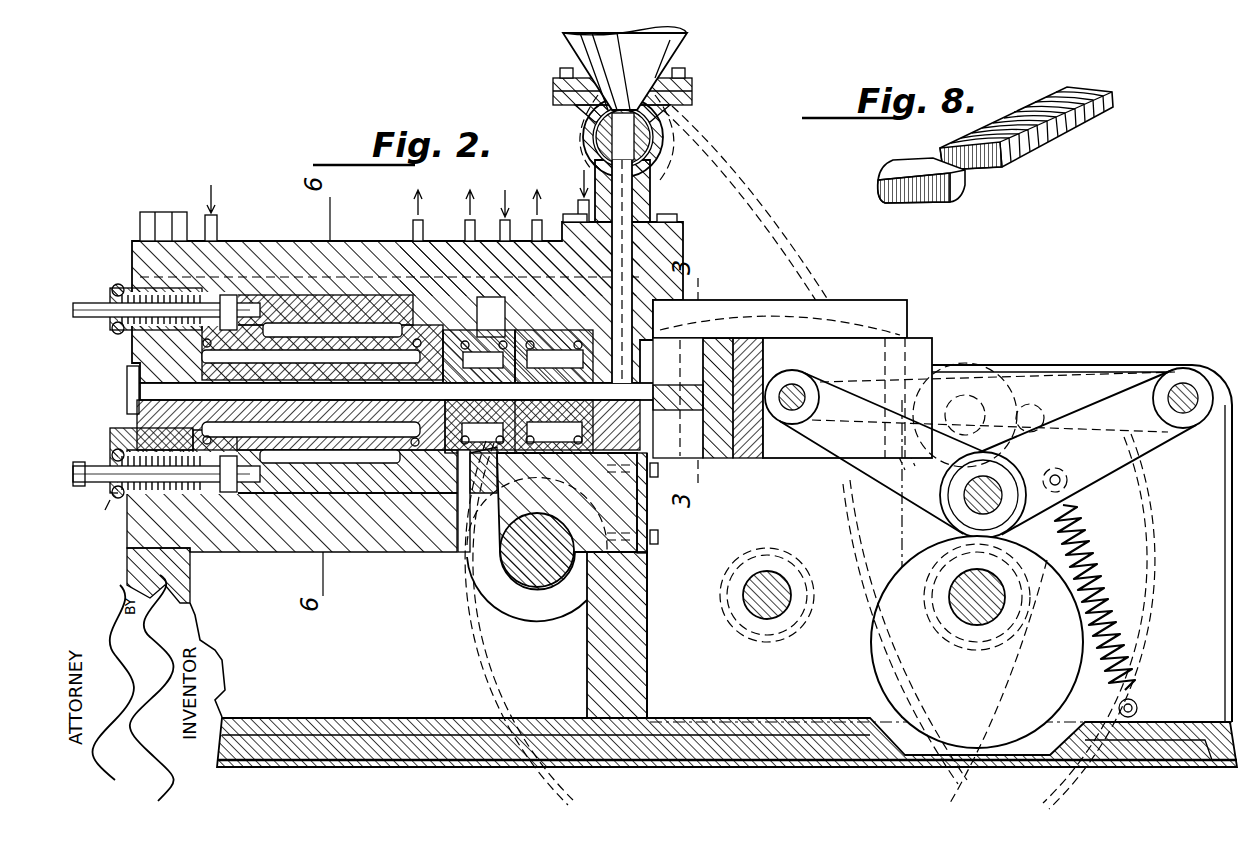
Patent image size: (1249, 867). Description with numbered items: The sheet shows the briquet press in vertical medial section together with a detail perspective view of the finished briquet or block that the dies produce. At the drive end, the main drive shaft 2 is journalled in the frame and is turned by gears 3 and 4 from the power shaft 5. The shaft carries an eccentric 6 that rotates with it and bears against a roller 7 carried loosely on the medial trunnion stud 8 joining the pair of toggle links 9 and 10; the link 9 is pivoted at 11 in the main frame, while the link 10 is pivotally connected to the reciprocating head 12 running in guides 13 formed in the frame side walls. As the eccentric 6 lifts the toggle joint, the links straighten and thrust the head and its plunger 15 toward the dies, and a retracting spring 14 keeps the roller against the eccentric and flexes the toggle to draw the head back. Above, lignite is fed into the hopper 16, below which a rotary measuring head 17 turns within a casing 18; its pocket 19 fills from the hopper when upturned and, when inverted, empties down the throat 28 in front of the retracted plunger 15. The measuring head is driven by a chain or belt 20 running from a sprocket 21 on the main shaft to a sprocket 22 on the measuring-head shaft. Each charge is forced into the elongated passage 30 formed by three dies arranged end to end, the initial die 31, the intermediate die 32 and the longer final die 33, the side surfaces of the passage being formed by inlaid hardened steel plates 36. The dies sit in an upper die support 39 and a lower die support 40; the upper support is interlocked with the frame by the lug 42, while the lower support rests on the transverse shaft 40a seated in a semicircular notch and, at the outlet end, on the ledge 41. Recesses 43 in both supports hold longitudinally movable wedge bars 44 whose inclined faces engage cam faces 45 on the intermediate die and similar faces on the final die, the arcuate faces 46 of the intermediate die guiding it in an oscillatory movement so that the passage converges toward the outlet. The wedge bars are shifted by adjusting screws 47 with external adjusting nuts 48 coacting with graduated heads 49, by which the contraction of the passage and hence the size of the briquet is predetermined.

The main drive shaft 2 is at (970, 612).
The gear 3 is at (813, 648).
The gear 4 is at (750, 636).
The power shaft 5 is at (750, 600).
The eccentric 6 is at (874, 626).
The roller 7 is at (968, 496).
The medial trunnion stud 8 is at (980, 500).
The toggle link 9 is at (1135, 448).
The toggle link 10 is at (884, 452).
The pivot 11 is at (1190, 398).
The reciprocating head 12 is at (930, 345).
The guides 13 is at (688, 318).
The retracting spring 14 is at (1097, 577).
The plunger 15 is at (720, 460).
The hopper 16 is at (625, 68).
The rotary measuring head 17 is at (655, 135).
The casing 18 is at (665, 155).
The pocket 19 is at (616, 128).
The driving chain 20 is at (748, 220).
The sprocket 21 is at (935, 571).
The sprocket 22 is at (652, 176).
The throat 28 is at (625, 212).
The elongated passage 30 is at (152, 390).
The initial die 31 is at (566, 378).
The intermediate die 32 is at (479, 370).
The final die 33 is at (356, 372).
The inlaid hardened steel plates 36 is at (126, 380).
The upper die supporting member 39 is at (237, 255).
The lower die supporting member 40 is at (396, 548).
The transverse shaft 40a is at (540, 572).
The transverse ledge 41 is at (192, 566).
The elevated lug 42 is at (400, 255).
The recesses 43 is at (192, 462).
The wedge bars 44 is at (303, 482).
The inclined cam faces 45 is at (468, 558).
The arcuate faces 46 is at (500, 335).
The adjusting screws 47 is at (88, 303).
The external adjusting nut 48 is at (85, 488).
The graduated head 49 is at (112, 500).